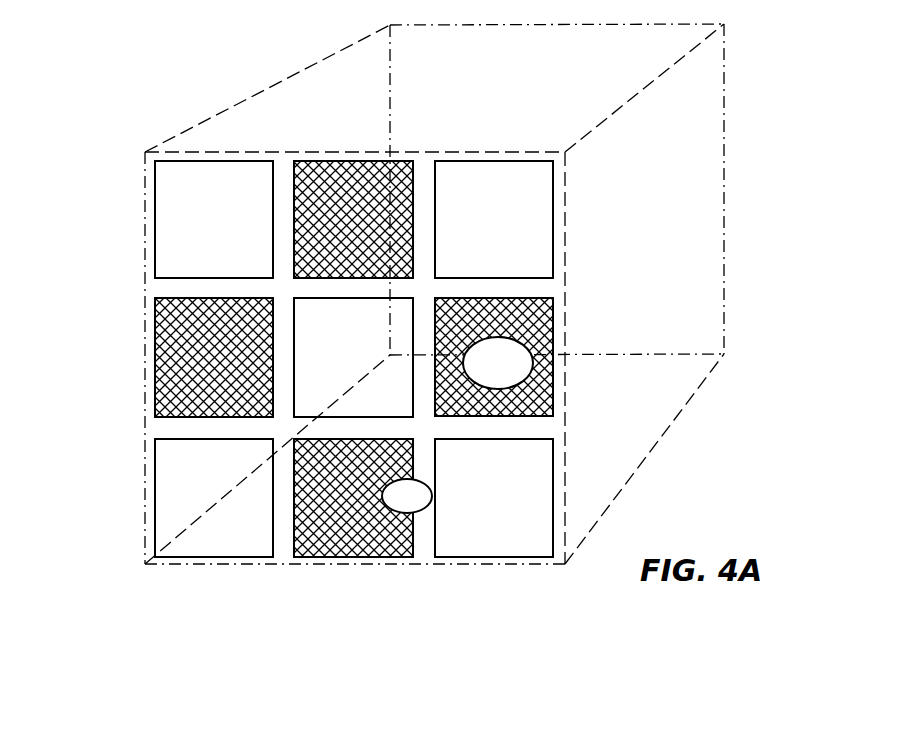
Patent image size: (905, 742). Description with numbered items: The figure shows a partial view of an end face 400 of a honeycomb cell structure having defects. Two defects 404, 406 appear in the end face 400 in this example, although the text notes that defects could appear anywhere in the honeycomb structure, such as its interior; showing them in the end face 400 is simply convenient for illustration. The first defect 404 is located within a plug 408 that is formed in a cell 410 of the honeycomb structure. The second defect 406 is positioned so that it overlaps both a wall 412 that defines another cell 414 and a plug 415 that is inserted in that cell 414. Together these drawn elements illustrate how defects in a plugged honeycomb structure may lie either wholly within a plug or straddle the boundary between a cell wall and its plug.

The end face 400 is at (145, 157).
The defect 404 is at (533, 378).
The defect 406 is at (427, 510).
The plug 408 is at (535, 325).
The cell 410 is at (552, 345).
The wall 412 is at (427, 540).
The cell 414 is at (308, 557).
The plug 415 is at (367, 548).